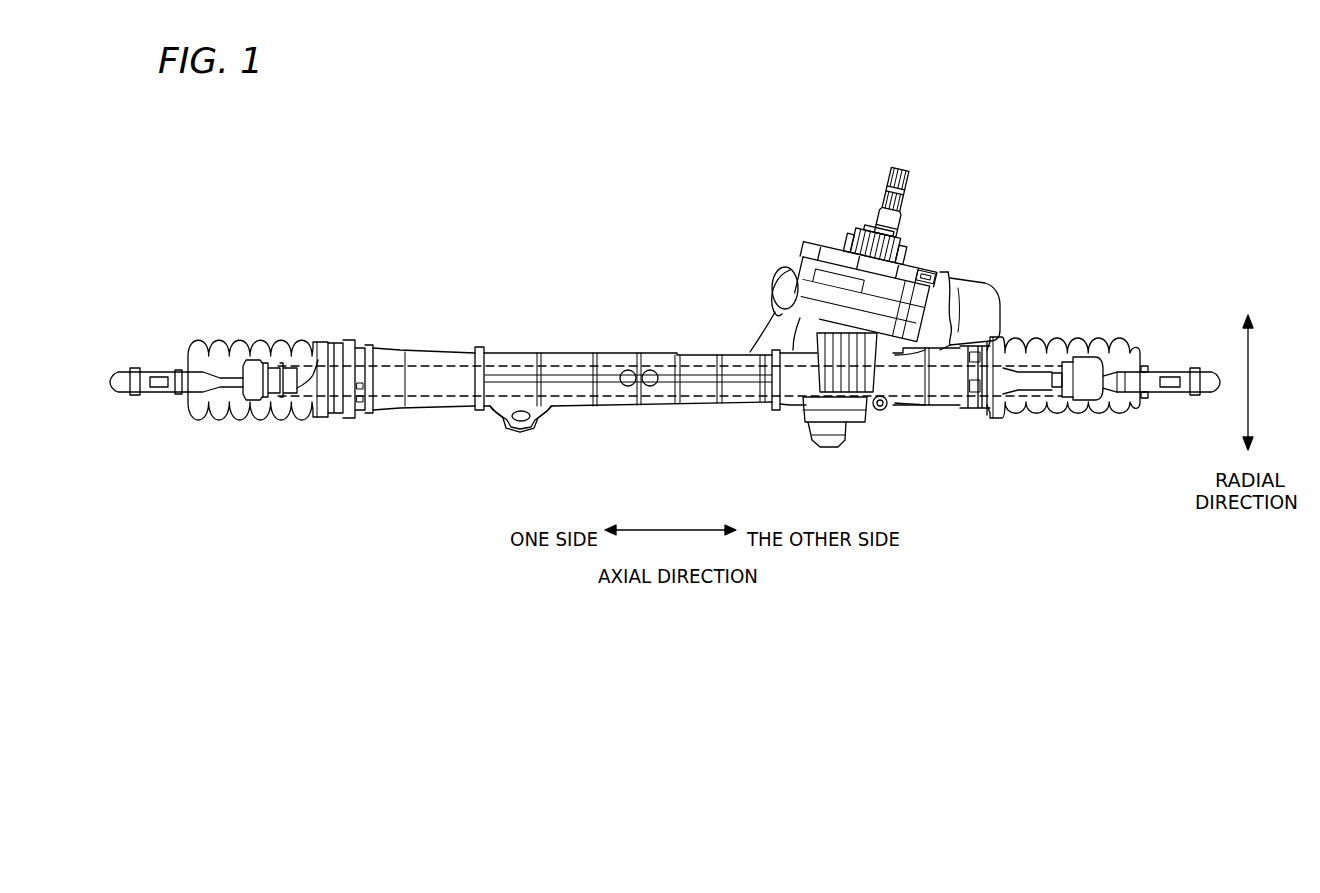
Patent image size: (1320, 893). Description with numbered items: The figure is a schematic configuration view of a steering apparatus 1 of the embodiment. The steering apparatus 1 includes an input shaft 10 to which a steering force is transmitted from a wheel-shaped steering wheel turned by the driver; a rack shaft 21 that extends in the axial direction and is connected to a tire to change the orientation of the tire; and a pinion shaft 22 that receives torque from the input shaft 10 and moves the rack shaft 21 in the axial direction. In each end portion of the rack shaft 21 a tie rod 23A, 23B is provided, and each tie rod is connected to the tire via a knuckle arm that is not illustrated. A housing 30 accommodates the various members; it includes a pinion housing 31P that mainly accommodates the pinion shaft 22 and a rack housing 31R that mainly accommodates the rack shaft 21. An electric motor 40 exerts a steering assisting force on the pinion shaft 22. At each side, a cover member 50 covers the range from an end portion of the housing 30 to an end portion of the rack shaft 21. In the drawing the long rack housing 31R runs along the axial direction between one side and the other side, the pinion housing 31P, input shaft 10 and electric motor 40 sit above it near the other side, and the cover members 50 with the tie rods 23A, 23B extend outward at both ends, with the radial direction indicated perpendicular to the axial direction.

The steering apparatus 1 is at (434, 212).
The input shaft 10 is at (912, 187).
The rack shaft 21 is at (1044, 368).
The pinion shaft 22 is at (862, 425).
The tie rod 23A is at (121, 378).
The tie rod 23B is at (1208, 378).
The housing 30 is at (680, 248).
The pinion housing 31P is at (790, 283).
The rack housing 31R is at (800, 352).
The electric motor 40 is at (985, 283).
The cover member 50 is at (240, 430).